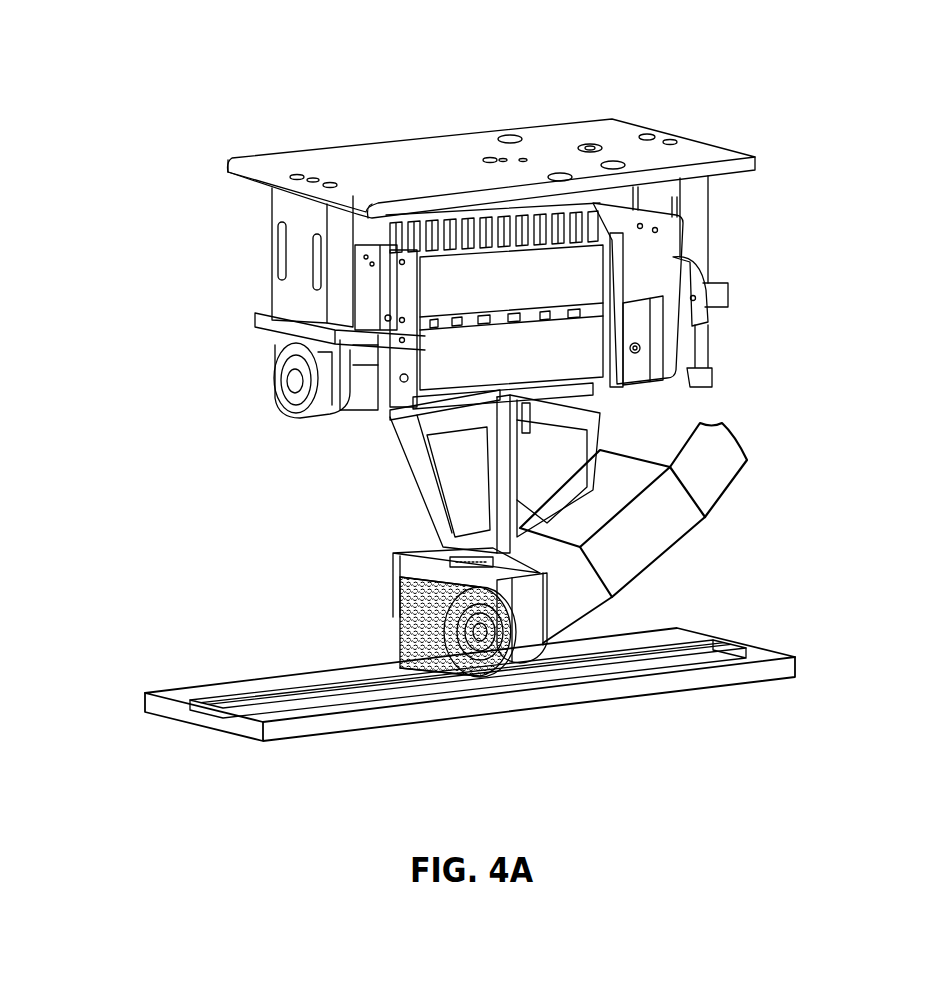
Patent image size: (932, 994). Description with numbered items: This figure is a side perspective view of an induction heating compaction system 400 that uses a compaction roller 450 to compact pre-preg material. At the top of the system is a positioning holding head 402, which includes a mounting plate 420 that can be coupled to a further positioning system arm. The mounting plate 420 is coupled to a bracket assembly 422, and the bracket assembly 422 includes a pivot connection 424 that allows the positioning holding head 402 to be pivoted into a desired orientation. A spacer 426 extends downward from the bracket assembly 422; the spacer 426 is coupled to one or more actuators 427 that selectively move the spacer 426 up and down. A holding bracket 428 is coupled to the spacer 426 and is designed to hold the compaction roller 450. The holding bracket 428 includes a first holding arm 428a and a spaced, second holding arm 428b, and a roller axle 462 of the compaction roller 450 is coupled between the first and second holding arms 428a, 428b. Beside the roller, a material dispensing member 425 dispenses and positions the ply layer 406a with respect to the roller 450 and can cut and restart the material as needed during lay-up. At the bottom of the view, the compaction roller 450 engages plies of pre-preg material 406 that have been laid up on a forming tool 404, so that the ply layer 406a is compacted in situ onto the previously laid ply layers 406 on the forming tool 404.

The induction heating compaction system 400 is at (802, 149).
The mounting plate 420 is at (613, 128).
The actuators 427 is at (480, 233).
The positioning holding head 402 is at (703, 230).
The bracket assembly 422 is at (292, 296).
The pivot connection 424 is at (296, 378).
The spacer 426 is at (420, 468).
The material dispensing member 425 is at (662, 537).
The second holding arm 428b is at (395, 585).
The compaction roller 450 is at (397, 623).
The holding bracket 428 is at (423, 637).
The roller axle 462 is at (487, 650).
The first holding arm 428a is at (527, 643).
The ply layer 406a is at (573, 602).
The plies of pre-preg material 406 is at (713, 640).
The forming tool 404 is at (745, 675).